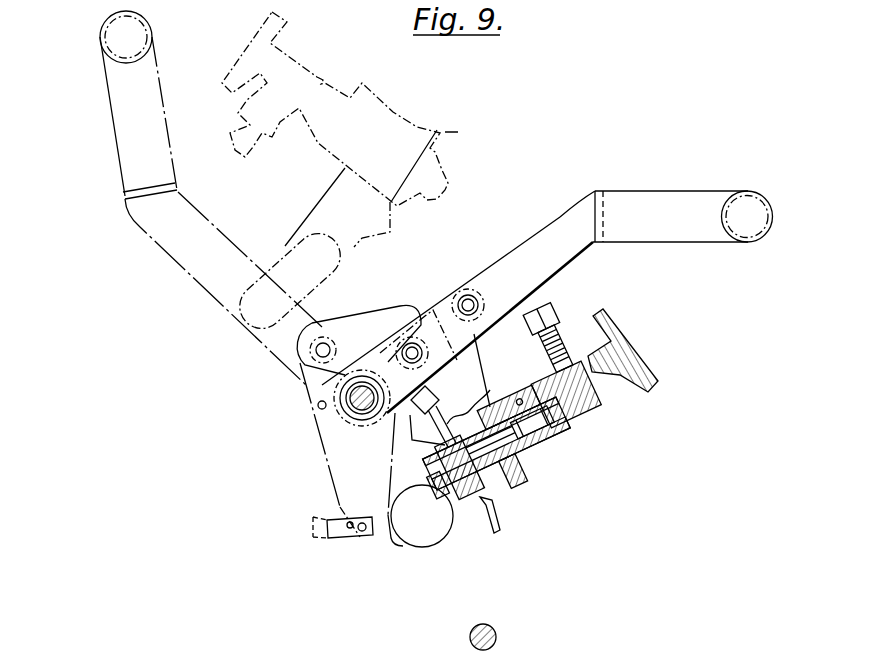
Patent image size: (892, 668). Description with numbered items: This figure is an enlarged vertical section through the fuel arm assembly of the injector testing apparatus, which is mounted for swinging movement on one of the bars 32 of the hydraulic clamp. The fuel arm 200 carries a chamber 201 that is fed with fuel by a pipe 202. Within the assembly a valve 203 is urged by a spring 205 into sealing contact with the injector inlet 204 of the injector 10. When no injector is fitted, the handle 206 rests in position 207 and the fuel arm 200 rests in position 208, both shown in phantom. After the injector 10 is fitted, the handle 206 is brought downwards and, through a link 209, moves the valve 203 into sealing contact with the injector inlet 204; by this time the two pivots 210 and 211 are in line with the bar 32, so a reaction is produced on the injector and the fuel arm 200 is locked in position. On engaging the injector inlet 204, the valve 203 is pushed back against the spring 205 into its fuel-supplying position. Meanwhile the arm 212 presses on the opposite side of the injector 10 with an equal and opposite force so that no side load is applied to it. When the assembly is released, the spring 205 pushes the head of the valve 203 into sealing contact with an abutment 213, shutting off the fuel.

The injector 10 is at (412, 538).
The bar 32 is at (362, 398).
The fuel arm 200 is at (462, 393).
The chamber 201 is at (555, 447).
The pipe 202 is at (553, 307).
The valve 203 is at (481, 503).
The injector inlet 204 is at (447, 505).
The spring 205 is at (553, 430).
The handle 206 is at (670, 202).
The handle position 207 is at (148, 155).
The arm position 208 is at (387, 122).
The link 209 is at (283, 267).
The pivot 210 is at (470, 299).
The pivot 211 is at (409, 350).
The arm 212 is at (345, 482).
The abutment 213 is at (523, 477).